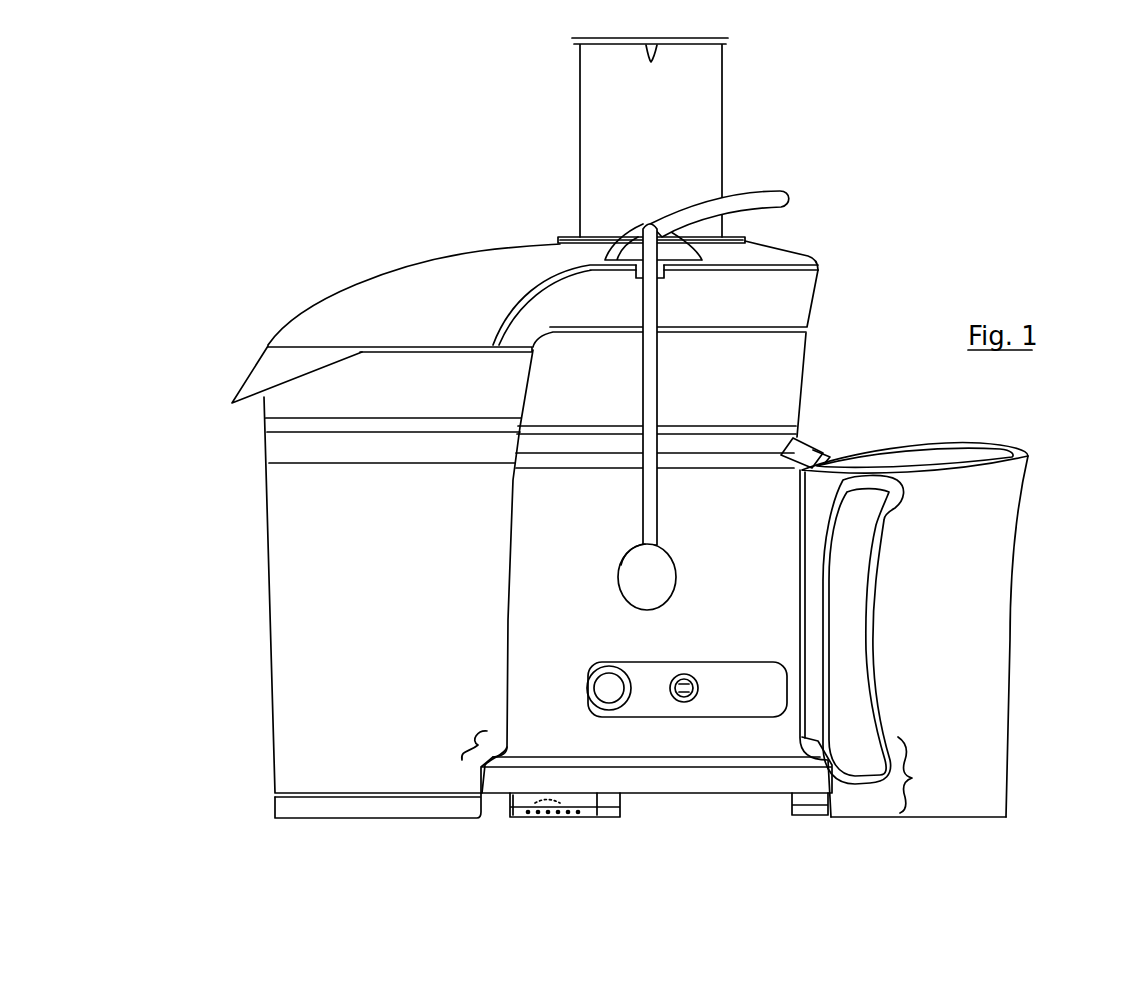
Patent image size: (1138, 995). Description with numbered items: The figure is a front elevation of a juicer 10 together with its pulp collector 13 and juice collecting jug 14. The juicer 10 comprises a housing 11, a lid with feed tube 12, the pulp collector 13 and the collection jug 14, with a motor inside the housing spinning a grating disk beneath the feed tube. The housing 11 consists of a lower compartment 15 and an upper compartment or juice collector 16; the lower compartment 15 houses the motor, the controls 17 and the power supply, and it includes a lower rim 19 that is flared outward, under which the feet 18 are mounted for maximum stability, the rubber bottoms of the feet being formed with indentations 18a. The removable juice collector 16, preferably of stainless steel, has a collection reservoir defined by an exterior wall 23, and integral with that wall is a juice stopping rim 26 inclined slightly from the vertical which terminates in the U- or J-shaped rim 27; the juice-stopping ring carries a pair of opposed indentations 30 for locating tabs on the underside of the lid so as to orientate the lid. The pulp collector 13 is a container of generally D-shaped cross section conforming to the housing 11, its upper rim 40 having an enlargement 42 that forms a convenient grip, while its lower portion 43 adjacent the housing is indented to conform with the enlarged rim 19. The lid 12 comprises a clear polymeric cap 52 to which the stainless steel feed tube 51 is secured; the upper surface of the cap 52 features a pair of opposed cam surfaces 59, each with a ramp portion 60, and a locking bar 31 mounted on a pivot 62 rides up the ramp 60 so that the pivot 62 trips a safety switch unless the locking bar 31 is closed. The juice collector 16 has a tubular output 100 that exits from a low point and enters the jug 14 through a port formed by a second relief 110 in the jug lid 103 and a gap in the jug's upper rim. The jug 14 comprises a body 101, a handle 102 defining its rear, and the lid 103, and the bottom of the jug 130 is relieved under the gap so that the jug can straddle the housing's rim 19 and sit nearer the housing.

The juicer 10 is at (443, 167).
The housing 11 is at (777, 365).
The lid with feed tube 12 is at (727, 163).
The pulp collector 13 is at (298, 518).
The collection jug 14 is at (967, 591).
The lower compartment 15 is at (761, 600).
The upper compartment or juice collector 16 is at (761, 407).
The controls 17 is at (695, 662).
The feet 18 is at (790, 817).
The indentations 18a is at (557, 808).
The lower rim 19 is at (810, 790).
The exterior wall 23 is at (802, 390).
The juice stopping rim 26 is at (803, 293).
The U or J shaped rim 27 is at (823, 268).
The indentations 30 is at (667, 280).
The locking bar 31 is at (788, 196).
The upper rim 40 is at (460, 352).
The enlargement 42 is at (260, 367).
The lower portion 43 is at (452, 748).
The feed tube 51 is at (710, 85).
The polymeric cap 52 is at (775, 251).
The cam surface 59 is at (627, 235).
The ramp portion 60 is at (693, 236).
The pivot 62 is at (647, 572).
The tubular output 100 is at (802, 452).
The body 101 is at (965, 662).
The handle 102 is at (848, 700).
The lid 103 is at (925, 460).
The second relief 110 is at (832, 457).
The bottom of the jug 130 is at (920, 772).